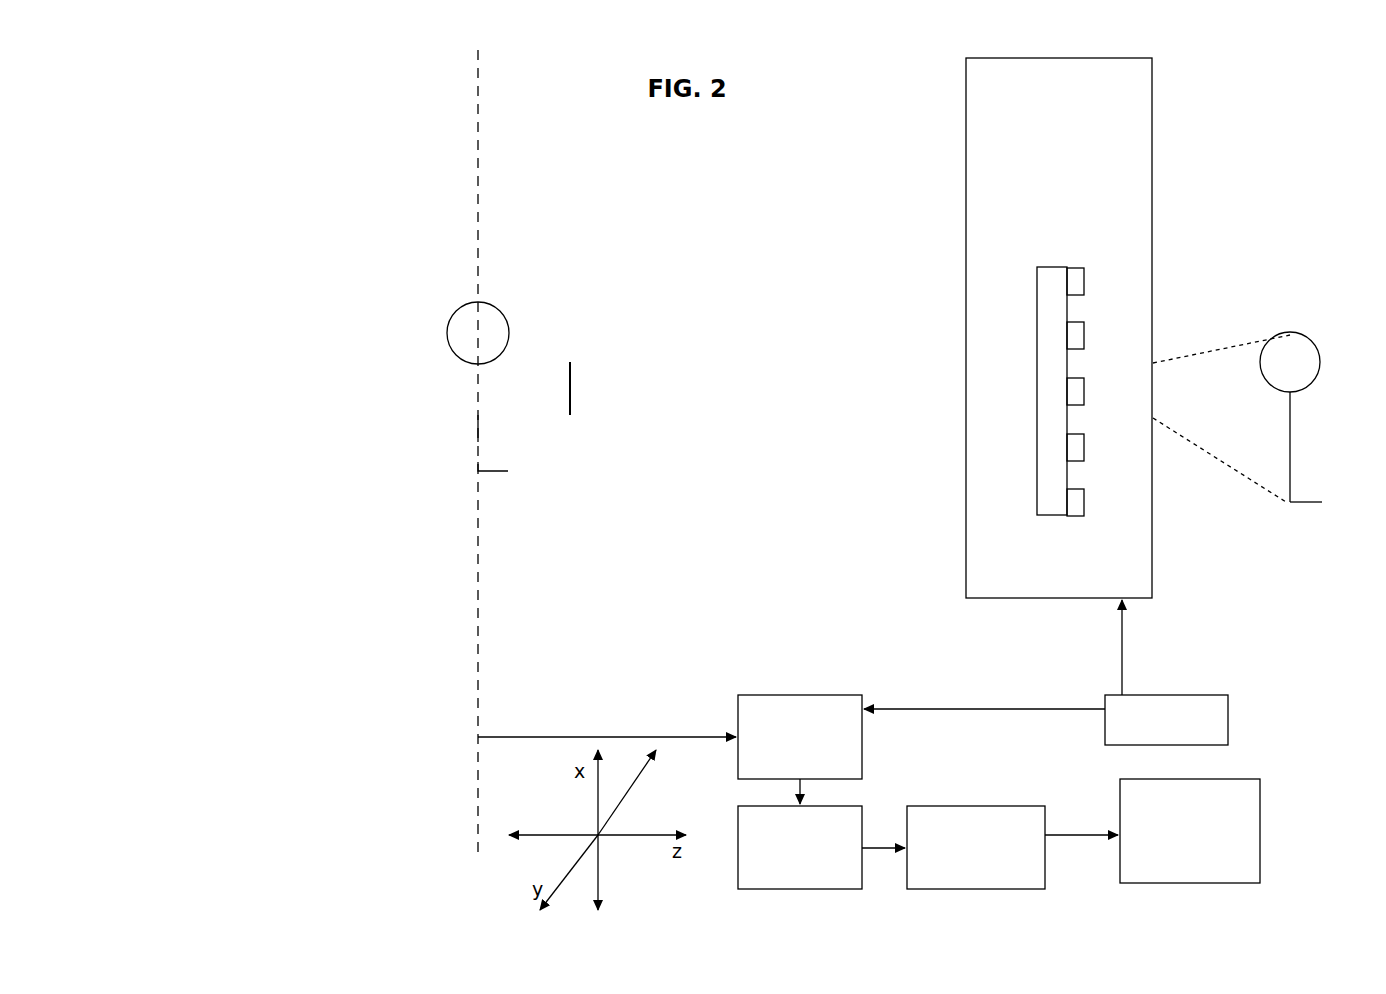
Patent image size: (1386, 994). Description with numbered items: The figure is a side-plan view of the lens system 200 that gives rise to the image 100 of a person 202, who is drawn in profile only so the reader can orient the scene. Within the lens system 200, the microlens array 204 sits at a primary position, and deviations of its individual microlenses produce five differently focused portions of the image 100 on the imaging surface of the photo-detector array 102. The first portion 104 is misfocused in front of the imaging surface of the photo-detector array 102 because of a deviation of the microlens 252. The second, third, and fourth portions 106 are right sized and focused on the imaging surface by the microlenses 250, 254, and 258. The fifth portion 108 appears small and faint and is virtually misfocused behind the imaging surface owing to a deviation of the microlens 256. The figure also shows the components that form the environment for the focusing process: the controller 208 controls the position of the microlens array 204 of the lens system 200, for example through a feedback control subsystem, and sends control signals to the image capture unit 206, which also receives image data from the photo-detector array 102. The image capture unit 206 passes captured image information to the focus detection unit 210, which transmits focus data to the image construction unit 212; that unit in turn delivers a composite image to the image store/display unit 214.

The image 100 is at (243, 192).
The photo-detector array 102 is at (478, 805).
The first portion 104 is at (590, 380).
The second, third, and fourth portions 106 is at (468, 429).
The fifth portion 108 is at (353, 489).
The lens system 200 is at (1152, 585).
The person 202 is at (1323, 292).
The microlens array 204 is at (1067, 307).
The image capture unit 206 is at (800, 737).
The controller 208 is at (1166, 720).
The focus detection unit 210 is at (800, 847).
The image construction unit 212 is at (976, 847).
The image store/display unit 214 is at (1190, 831).
The microlens 250 is at (1084, 274).
The microlens 252 is at (1084, 325).
The microlens 254 is at (1084, 380).
The microlens 256 is at (1084, 458).
The microlens 258 is at (1084, 512).